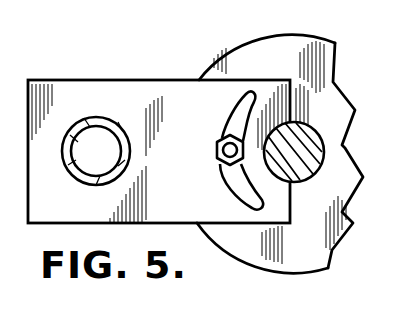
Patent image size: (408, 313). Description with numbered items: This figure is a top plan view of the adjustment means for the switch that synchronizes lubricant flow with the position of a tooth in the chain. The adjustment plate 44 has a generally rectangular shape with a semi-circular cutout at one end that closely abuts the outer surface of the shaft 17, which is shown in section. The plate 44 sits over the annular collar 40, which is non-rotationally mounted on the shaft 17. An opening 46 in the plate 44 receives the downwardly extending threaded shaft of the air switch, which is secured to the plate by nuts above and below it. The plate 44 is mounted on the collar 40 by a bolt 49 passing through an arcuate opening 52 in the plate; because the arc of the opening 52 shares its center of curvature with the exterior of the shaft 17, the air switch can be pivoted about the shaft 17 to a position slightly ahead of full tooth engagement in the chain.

The annular collar 40 is at (318, 28).
The adjustment plate 44 is at (163, 80).
The opening 46 is at (125, 136).
The bolt 49 is at (225, 136).
The arcuate opening 52 is at (225, 186).
The shaft 17 is at (320, 147).